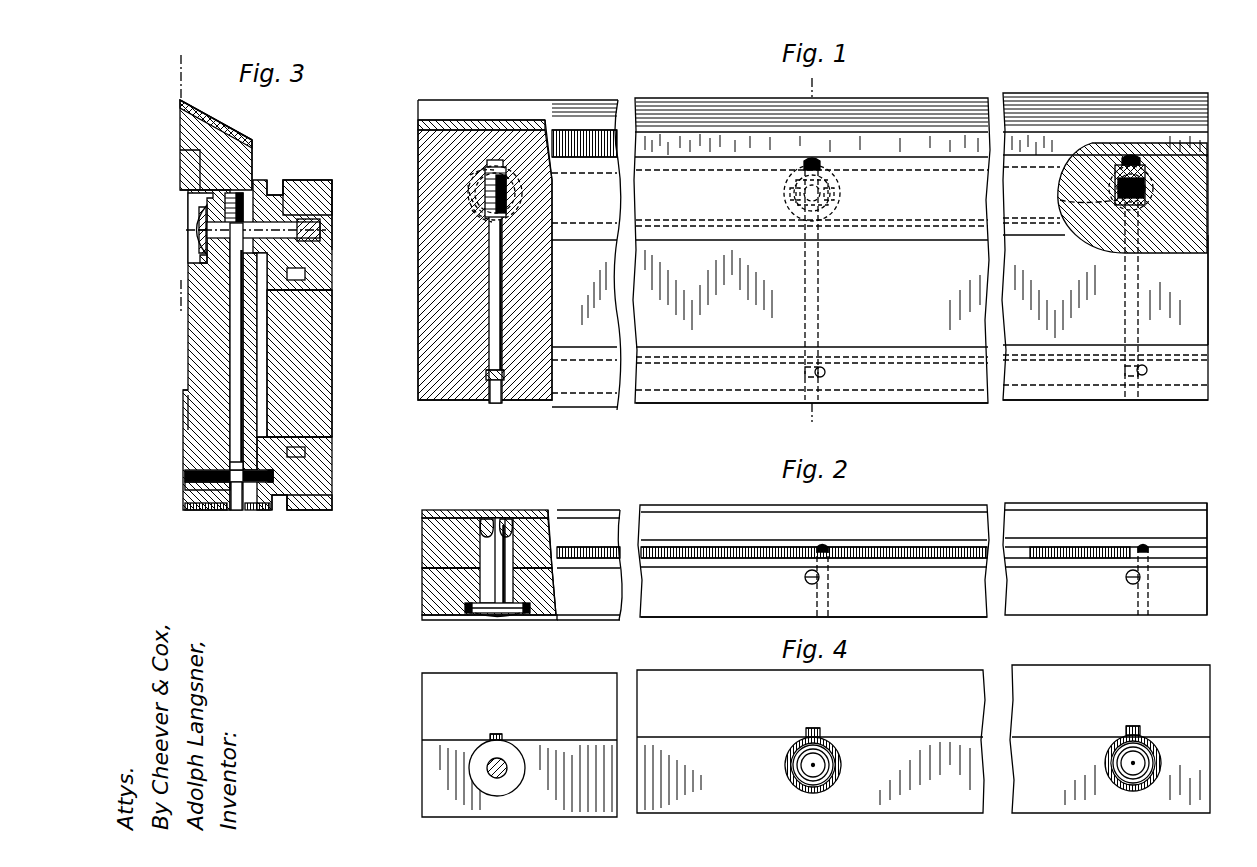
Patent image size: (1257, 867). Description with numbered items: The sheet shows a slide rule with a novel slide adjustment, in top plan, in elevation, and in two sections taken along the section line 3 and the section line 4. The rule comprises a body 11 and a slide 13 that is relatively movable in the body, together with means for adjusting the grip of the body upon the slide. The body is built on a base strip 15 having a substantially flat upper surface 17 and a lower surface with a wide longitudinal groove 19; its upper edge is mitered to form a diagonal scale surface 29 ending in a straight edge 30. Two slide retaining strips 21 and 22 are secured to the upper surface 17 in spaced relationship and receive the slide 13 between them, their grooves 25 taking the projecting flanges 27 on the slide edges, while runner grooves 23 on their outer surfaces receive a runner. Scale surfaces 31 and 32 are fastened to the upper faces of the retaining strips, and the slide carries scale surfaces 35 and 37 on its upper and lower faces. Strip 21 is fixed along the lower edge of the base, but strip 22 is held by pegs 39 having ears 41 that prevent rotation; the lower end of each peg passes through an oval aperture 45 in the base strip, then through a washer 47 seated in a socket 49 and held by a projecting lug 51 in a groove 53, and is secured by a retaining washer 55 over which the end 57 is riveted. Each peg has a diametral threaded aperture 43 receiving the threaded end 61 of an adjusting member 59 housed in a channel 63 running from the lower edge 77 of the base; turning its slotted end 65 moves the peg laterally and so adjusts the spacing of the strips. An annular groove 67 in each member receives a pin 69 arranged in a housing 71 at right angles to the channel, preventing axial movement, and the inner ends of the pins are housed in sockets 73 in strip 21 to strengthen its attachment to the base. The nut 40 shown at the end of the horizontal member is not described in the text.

In FIG. 1, the section line 3— 3 is at (829, 88).
In FIG. 3, the section line 4— 4 is at (196, 72).
In FIG. 3, the body 11 is at (210, 352).
In FIG. 1, the body 11 is at (1208, 161).
In FIG. 2, the body 11 is at (1208, 587).
In FIG. 3, the slide 13 is at (311, 343).
In FIG. 1, the slide 13 is at (1209, 301).
In FIG. 2, the slide 13 is at (1143, 547).
In FIG. 3, the base strip 15 is at (205, 143).
In FIG. 2, the base strip 15 is at (440, 600).
In FIG. 4, the base strip 15 is at (1202, 710).
In FIG. 3, the upper surface 17 is at (258, 168).
In FIG. 1, the upper surface 17 is at (575, 135).
In FIG. 2, the upper surface 17 is at (445, 570).
In FIG. 3, the groove 19 is at (188, 388).
In FIG. 2, the groove 19 is at (556, 613).
In FIG. 3, the slide retaining strip 21 is at (315, 506).
In FIG. 1, the slide retaining strip 21 is at (950, 400).
In FIG. 3, the slide retaining strip 22 is at (286, 262).
In FIG. 1, the slide retaining strip 22 is at (938, 150).
In FIG. 2, the slide retaining strip 22 is at (445, 533).
In FIG. 3, the runner grooves 23 is at (276, 189).
In FIG. 2, the runner grooves 23 is at (678, 547).
In FIG. 3, the grooves 25 is at (306, 275).
In FIG. 3, the projecting flanges 27 is at (311, 289).
In FIG. 3, the diagonal scale surface 29 is at (232, 129).
In FIG. 1, the diagonal scale surface 29 is at (460, 100).
In FIG. 3, the straight edge 30 is at (178, 100).
In FIG. 1, the straight edge 30 is at (730, 97).
In FIG. 4, the straight edge 30 is at (702, 671).
In FIG. 3, the scale surface 31 is at (333, 496).
In FIG. 1, the scale surface 31 is at (688, 392).
In FIG. 3, the scale surface 32 is at (333, 195).
In FIG. 1, the scale surface 32 is at (676, 185).
In FIG. 2, the scale surface 32 is at (455, 510).
In FIG. 3, the scale surface 35 is at (333, 379).
In FIG. 3, the scale surface 37 is at (268, 410).
In FIG. 3, the pegs 39 is at (300, 182).
In FIG. 2, the pegs 39 is at (490, 518).
In FIG. 4, the pegs 39 is at (507, 768).
In FIG. 3, the end nut 40 is at (333, 229).
In FIG. 2, the ears 41 is at (509, 518).
In FIG. 3, the threaded aperture 43 is at (256, 230).
In FIG. 1, the threaded aperture 43 is at (506, 206).
In FIG. 3, the oval aperture 45 is at (192, 230).
In FIG. 3, the washer 47 is at (195, 262).
In FIG. 2, the washer 47 is at (530, 612).
In FIG. 4, the washer 47 is at (510, 790).
In FIG. 3, the socket 49 is at (196, 198).
In FIG. 2, the socket 49 is at (470, 612).
In FIG. 3, the projecting lug 51 is at (186, 160).
In FIG. 4, the projecting lug 51 is at (492, 737).
In FIG. 3, the groove 53 is at (186, 178).
In FIG. 4, the groove 53 is at (503, 738).
In FIG. 3, the retaining washer 55 is at (194, 247).
In FIG. 2, the retaining washer 55 is at (510, 614).
In FIG. 4, the retaining washer 55 is at (835, 778).
In FIG. 3, the end 57 is at (194, 216).
In FIG. 2, the end 57 is at (492, 614).
In FIG. 4, the end 57 is at (800, 780).
In FIG. 3, the adjusting members 59 is at (232, 322).
In FIG. 2, the adjusting members 59 is at (490, 582).
In FIG. 3, the threaded end 61 is at (241, 182).
In FIG. 1, the threaded end 61 is at (506, 176).
In FIG. 3, the channels 63 is at (218, 413).
In FIG. 3, the slotted end 65 is at (236, 512).
In FIG. 1, the slotted end 65 is at (495, 404).
In FIG. 2, the slotted end 65 is at (805, 577).
In FIG. 3, the annular groove 67 is at (232, 462).
In FIG. 3, the pins 69 is at (186, 473).
In FIG. 2, the pins 69 is at (830, 594).
In FIG. 3, the channels or housings 71 is at (200, 485).
In FIG. 3, the sockets 73 is at (275, 473).
In FIG. 3, the lower edge 77 is at (207, 513).
In FIG. 1, the lower edge 77 is at (1050, 400).
In FIG. 2, the lower edge 77 is at (925, 600).